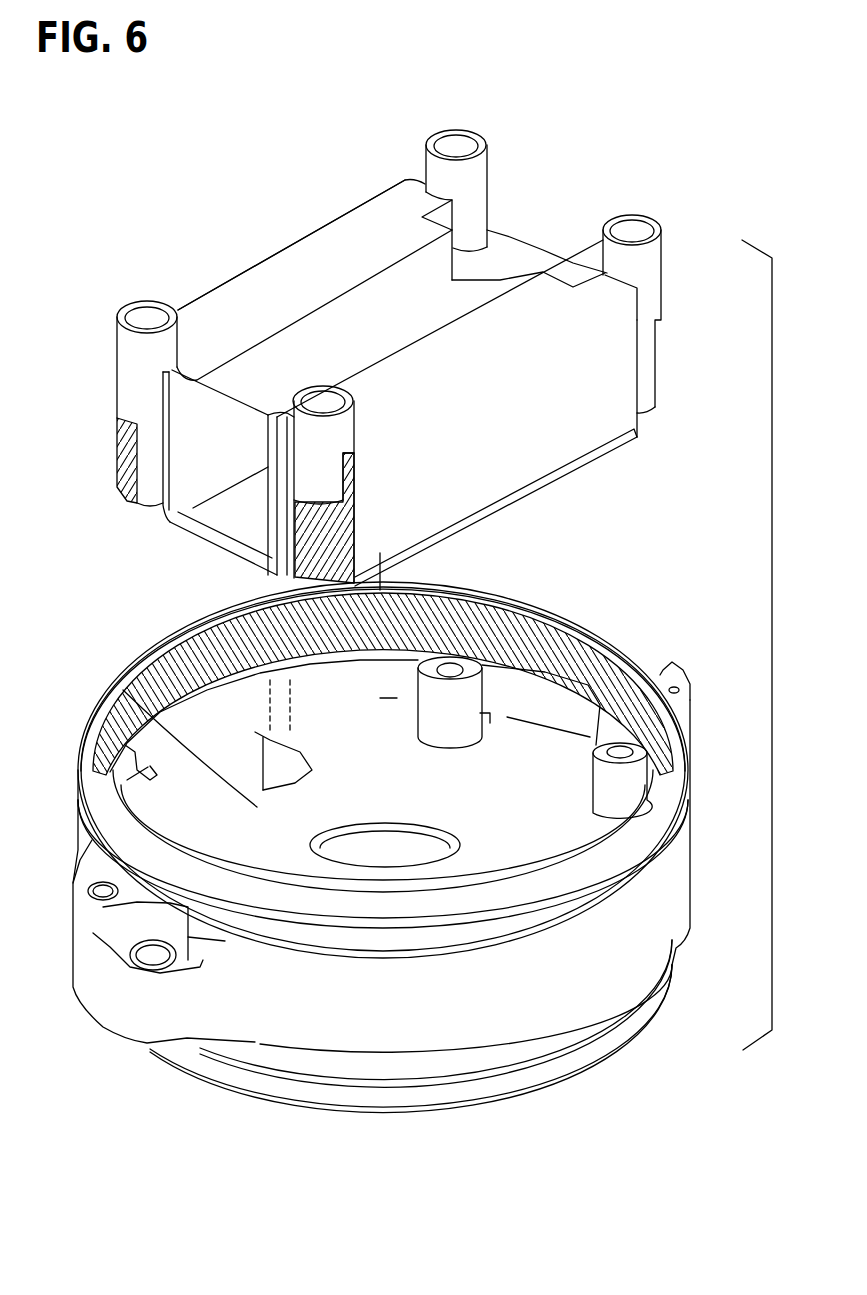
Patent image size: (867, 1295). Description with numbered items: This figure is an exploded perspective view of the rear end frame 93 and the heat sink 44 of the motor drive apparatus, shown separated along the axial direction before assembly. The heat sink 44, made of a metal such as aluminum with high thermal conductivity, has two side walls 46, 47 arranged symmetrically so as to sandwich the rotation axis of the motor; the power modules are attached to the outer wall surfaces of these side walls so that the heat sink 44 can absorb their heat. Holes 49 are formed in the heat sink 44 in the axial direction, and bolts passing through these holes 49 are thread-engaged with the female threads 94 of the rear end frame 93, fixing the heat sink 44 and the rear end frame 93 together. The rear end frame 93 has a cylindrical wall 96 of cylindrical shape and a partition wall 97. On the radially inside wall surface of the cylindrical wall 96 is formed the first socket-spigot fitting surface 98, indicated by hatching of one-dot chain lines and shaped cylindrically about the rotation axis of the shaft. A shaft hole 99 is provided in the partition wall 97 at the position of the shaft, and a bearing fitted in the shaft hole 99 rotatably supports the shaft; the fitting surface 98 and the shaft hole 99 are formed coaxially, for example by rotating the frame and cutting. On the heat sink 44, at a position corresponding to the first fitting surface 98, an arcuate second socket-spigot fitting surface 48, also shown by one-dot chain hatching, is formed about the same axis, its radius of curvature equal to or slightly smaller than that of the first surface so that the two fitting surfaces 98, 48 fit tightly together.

The heat sink 44 is at (527, 243).
The side wall 46 is at (257, 273).
The side wall 47 is at (587, 435).
The second socket-spigot fitting surface 48 is at (115, 462).
The holes 49 is at (440, 136).
The rear end frame 93 is at (690, 870).
The female threads 94 is at (452, 663).
The cylindrical wall 96 is at (98, 818).
The partition wall 97 is at (103, 687).
The first socket-spigot fitting surface 98 is at (193, 657).
The shaft hole 99 is at (432, 855).